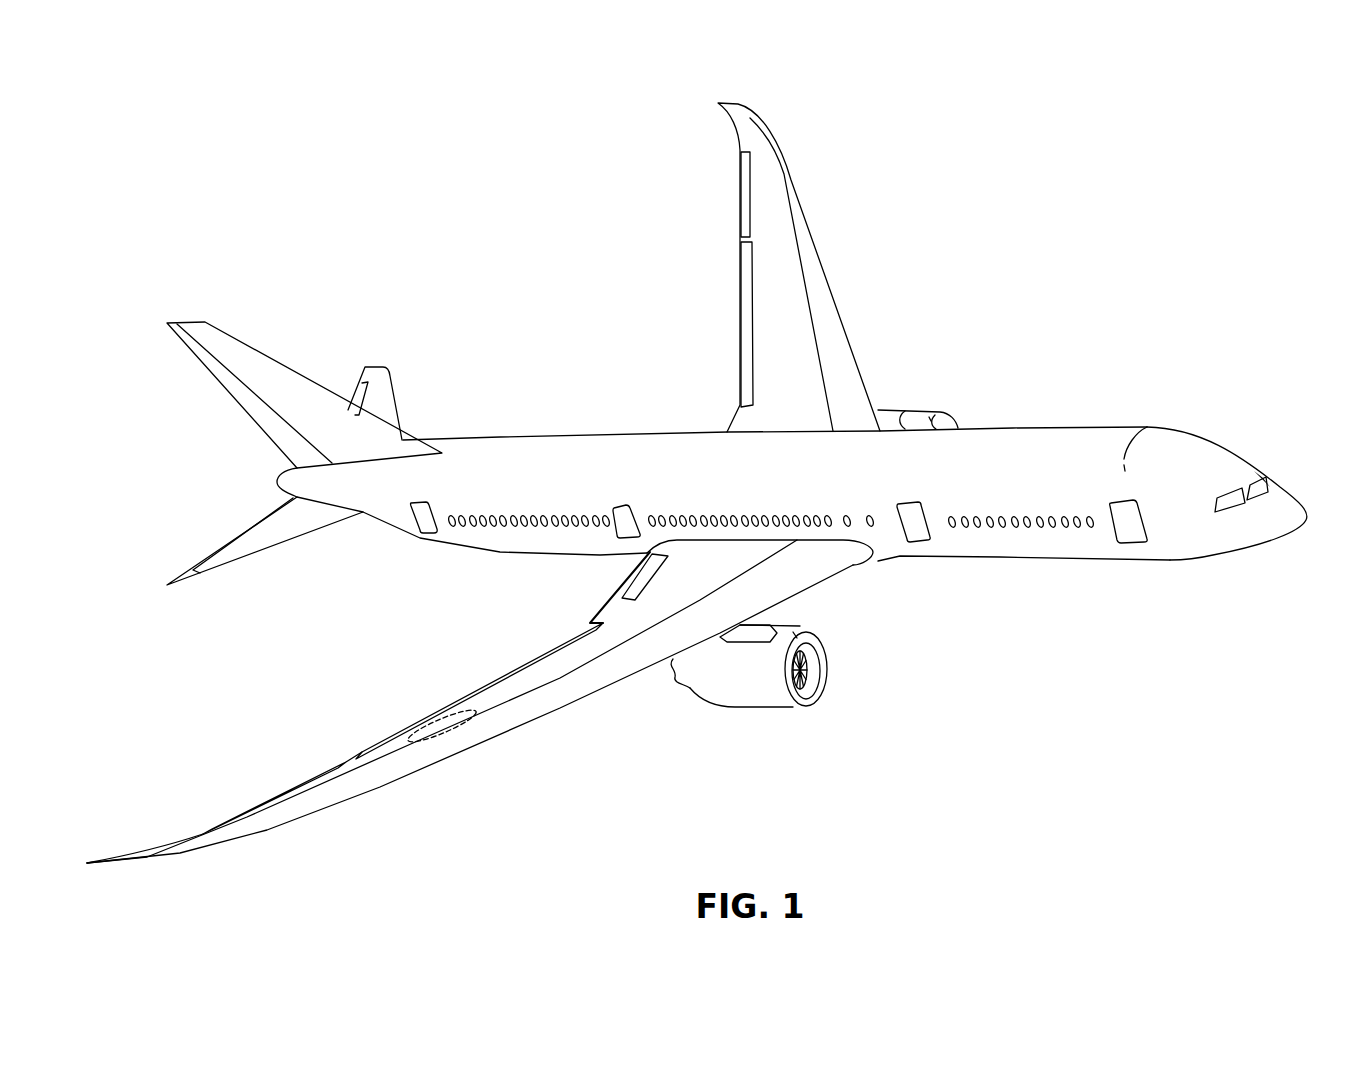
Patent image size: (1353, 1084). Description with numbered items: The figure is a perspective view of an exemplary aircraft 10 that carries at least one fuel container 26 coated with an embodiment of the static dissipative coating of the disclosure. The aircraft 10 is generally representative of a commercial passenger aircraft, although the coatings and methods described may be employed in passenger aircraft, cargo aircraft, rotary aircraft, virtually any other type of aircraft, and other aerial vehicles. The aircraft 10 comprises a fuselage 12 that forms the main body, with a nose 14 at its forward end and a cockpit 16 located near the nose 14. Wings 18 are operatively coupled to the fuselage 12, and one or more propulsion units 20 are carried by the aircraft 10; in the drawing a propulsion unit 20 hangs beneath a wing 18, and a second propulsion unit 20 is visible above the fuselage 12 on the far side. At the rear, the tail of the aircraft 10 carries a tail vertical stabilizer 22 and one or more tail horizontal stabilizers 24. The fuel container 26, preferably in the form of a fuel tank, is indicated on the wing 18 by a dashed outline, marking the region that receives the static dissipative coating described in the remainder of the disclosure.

The aircraft 10 is at (1064, 232).
The fuselage 12 is at (1015, 440).
The nose 14 is at (1280, 523).
The cockpit 16 is at (1257, 476).
The wings 18 is at (793, 216).
The propulsion units 20 is at (921, 412).
The tail vertical stabilizer 22 is at (240, 355).
The tail horizontal stabilizers 24 is at (387, 396).
The fuel container 26 is at (450, 718).